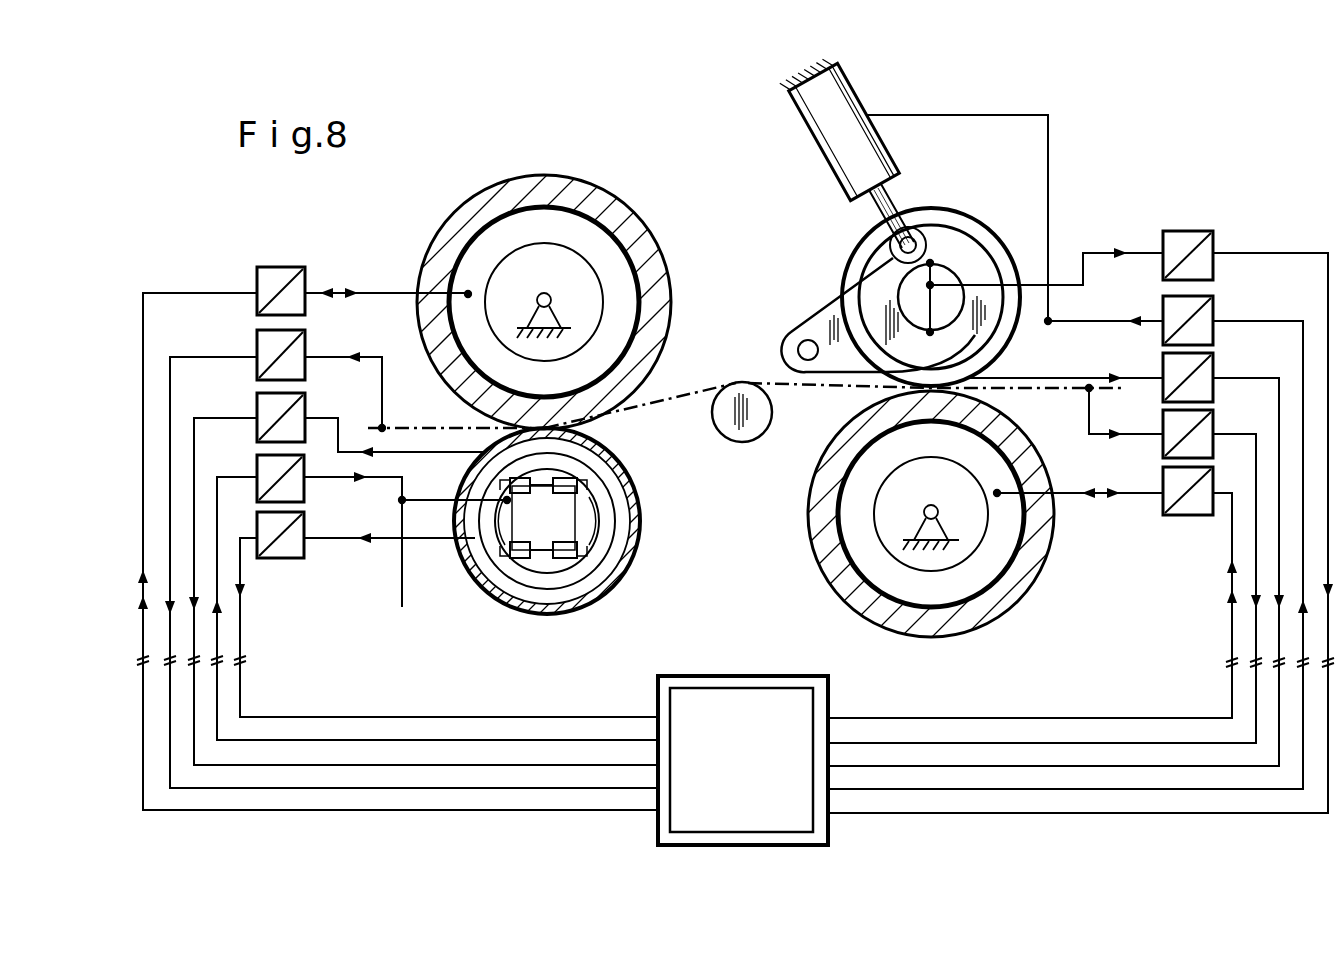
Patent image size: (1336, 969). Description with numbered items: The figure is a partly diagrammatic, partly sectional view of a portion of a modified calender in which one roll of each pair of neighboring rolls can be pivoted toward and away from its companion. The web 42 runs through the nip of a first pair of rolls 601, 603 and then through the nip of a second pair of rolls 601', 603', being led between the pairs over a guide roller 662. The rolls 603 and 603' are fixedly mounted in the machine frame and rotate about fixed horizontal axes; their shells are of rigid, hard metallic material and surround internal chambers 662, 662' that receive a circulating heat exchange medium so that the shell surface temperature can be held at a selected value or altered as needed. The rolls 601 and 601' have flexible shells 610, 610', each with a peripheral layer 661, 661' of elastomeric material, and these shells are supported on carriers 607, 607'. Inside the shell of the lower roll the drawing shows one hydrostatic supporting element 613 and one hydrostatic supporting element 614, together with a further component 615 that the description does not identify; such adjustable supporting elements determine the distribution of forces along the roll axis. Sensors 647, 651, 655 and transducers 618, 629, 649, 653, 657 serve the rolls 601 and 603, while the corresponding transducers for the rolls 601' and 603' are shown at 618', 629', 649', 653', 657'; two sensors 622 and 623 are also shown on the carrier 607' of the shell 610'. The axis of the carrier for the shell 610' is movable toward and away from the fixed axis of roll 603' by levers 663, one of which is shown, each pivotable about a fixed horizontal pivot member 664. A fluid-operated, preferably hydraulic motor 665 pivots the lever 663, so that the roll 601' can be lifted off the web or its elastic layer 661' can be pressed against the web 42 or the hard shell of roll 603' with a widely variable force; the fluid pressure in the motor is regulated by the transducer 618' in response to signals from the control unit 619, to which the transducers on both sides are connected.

The roll 603 is at (544, 291).
The internal chamber 662 is at (617, 315).
The sensor 655 is at (462, 290).
The transducer 657 is at (397, 529).
The transducer 649 is at (411, 554).
The transducer 653 is at (423, 574).
The transducer 618 is at (434, 593).
The transducer 629 is at (446, 614).
The sensor 647 is at (456, 410).
The sensor 651 is at (485, 450).
The roll 601 is at (584, 521).
The peripheral layer 661 is at (547, 538).
The flexible shell 610 is at (574, 535).
The hydrostatic supporting element 613 is at (550, 468).
The carrier 607 is at (605, 518).
The hydrostatic supporting element 614 is at (498, 594).
The supply line 615 is at (504, 503).
The web 42 is at (818, 390).
The roll 601' is at (931, 276).
The peripheral layer 661' is at (958, 280).
The flexible shell 610' is at (1045, 268).
The carrier 607' is at (872, 291).
The sensor 622 is at (928, 263).
The sensor 623 is at (928, 331).
The lever 663 is at (870, 332).
The pivot member 664 is at (797, 350).
The fluid-operated motor 665 is at (840, 93).
The roll 603' is at (931, 528).
The internal chamber 662' is at (929, 541).
The transducer 629' is at (1081, 512).
The transducer 618' is at (1068, 537).
The transducer 653' is at (1065, 556).
The transducer 649' is at (1057, 564).
The transducer 657' is at (1033, 592).
The control unit 619 is at (762, 778).